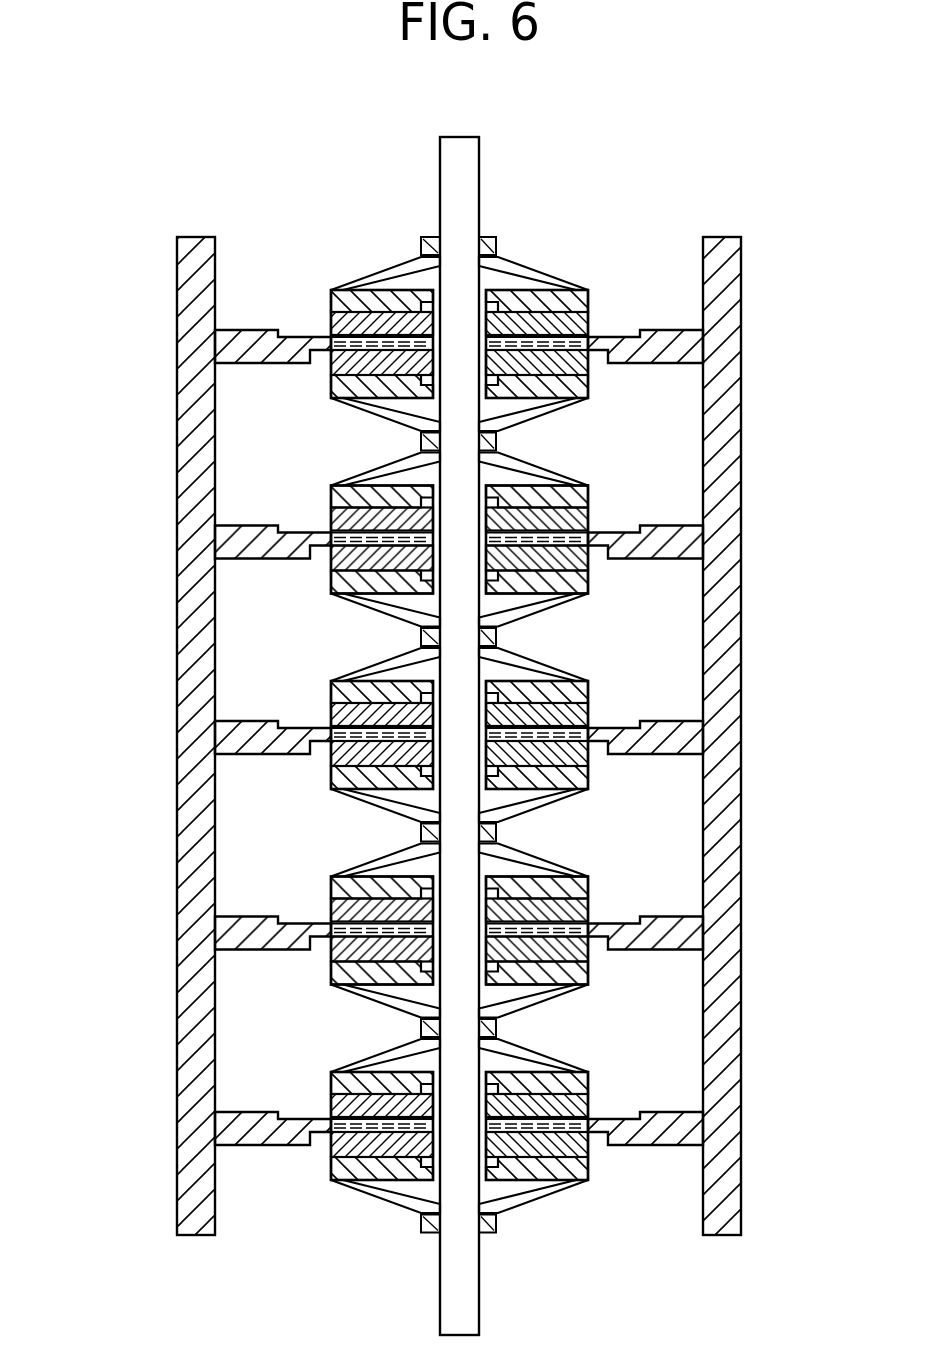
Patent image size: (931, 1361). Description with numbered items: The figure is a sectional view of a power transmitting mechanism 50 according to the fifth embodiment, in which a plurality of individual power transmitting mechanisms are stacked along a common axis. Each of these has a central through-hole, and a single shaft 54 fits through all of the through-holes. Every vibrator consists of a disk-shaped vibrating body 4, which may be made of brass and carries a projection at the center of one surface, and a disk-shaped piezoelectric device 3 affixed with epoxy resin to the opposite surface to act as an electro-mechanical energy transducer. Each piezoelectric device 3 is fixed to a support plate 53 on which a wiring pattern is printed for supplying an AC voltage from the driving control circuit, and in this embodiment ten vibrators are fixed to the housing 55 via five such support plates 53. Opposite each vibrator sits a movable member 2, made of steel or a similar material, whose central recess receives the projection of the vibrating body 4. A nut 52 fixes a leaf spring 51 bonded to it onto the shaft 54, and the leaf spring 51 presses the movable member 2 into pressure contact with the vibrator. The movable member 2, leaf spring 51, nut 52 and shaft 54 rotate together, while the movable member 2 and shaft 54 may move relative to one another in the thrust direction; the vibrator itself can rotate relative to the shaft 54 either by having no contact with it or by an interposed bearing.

The power transmitting mechanism 50 is at (172, 308).
The movable member 2 is at (582, 290).
The piezoelectric device 3 is at (588, 337).
The vibrating body 4 is at (588, 313).
The leaf spring 51 is at (533, 272).
The nut 52 is at (489, 237).
The support plate 53 is at (593, 352).
The shaft 54 is at (472, 162).
The housing 55 is at (730, 272).